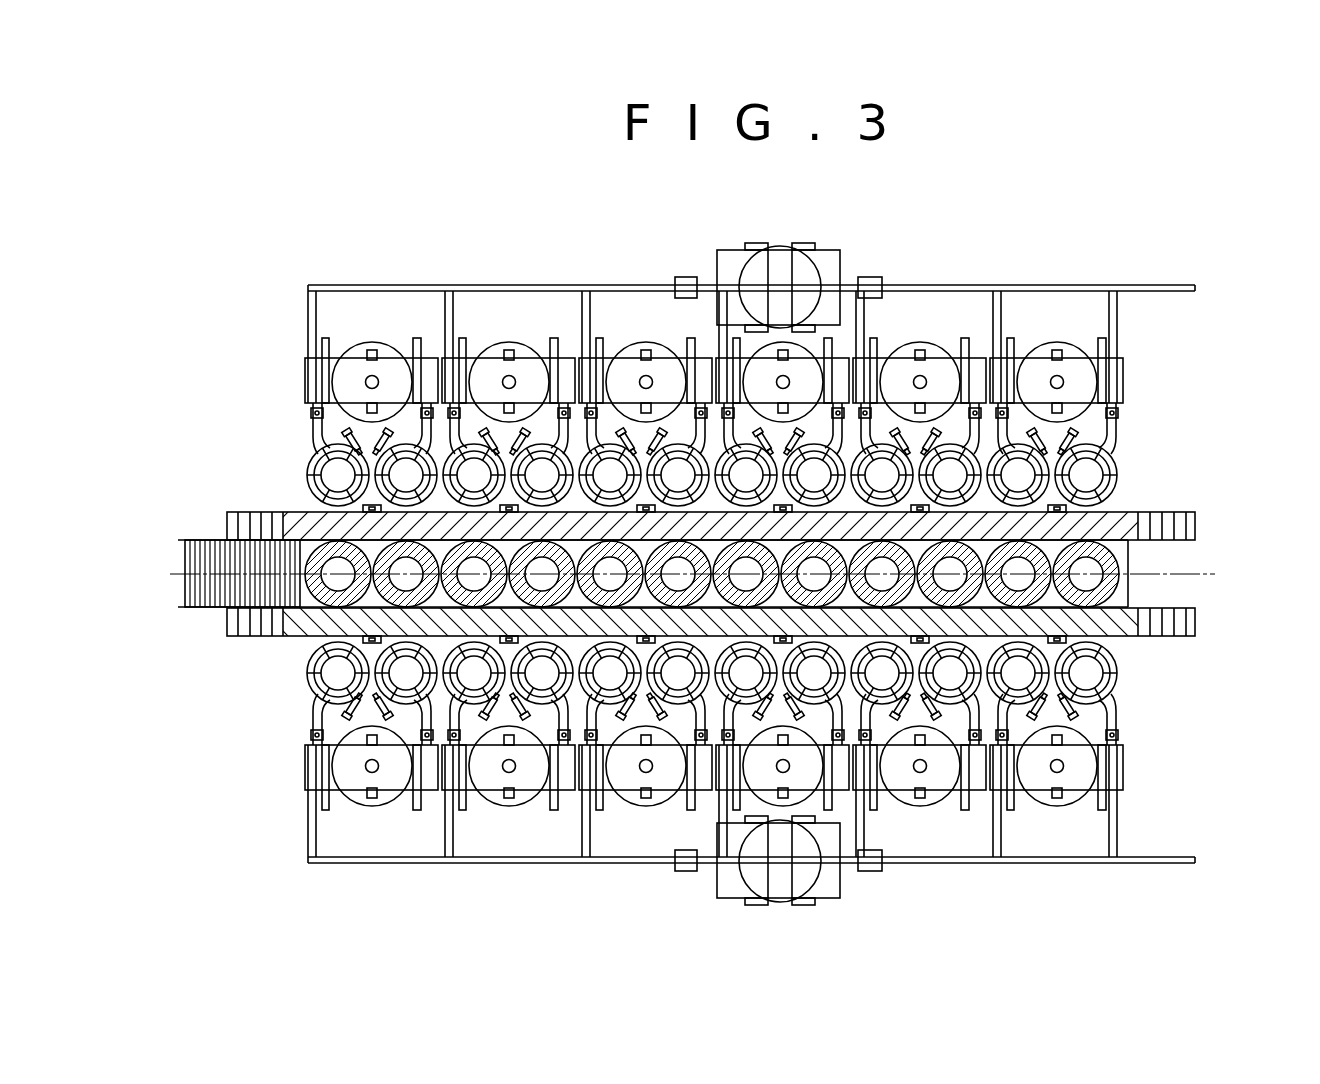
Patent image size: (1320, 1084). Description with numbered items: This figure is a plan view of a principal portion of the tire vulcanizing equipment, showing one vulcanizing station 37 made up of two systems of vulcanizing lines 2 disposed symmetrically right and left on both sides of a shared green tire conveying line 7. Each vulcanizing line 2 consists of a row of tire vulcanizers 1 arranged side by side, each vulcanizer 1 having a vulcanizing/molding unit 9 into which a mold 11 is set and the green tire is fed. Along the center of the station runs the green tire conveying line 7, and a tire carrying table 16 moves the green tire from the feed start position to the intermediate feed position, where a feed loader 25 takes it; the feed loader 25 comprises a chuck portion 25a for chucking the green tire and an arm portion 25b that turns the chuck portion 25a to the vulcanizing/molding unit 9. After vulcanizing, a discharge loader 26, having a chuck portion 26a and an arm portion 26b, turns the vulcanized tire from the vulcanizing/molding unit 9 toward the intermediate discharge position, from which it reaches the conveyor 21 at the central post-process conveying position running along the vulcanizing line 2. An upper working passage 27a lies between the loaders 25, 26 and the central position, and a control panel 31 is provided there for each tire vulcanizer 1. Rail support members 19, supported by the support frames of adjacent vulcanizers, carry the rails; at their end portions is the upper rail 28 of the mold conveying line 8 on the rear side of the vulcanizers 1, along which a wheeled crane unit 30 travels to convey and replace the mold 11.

The tire vulcanizer 1 is at (620, 330).
The vulcanizing line 2 is at (1190, 405).
The green tire conveying line 7 is at (1218, 575).
The mold conveying line 8 is at (1177, 283).
The vulcanizing/molding unit 9 is at (385, 350).
The mold 11 is at (778, 250).
The tire carrying table 16 is at (1122, 583).
The rail support member 19 is at (864, 318).
The conveyor 21 is at (203, 540).
The feed loader 25 is at (407, 422).
The chuck portion 25a is at (1120, 479).
The arm portion 25b is at (1110, 425).
The discharge loader 26 is at (246, 432).
The chuck portion 26a is at (320, 480).
The arm portion 26b is at (317, 430).
The upper working passage 27a is at (1190, 530).
The upper rail 28 is at (1133, 285).
The wheeled crane unit 30 is at (845, 250).
The control panel 31 is at (1062, 510).
The vulcanizing station 37 is at (1212, 292).